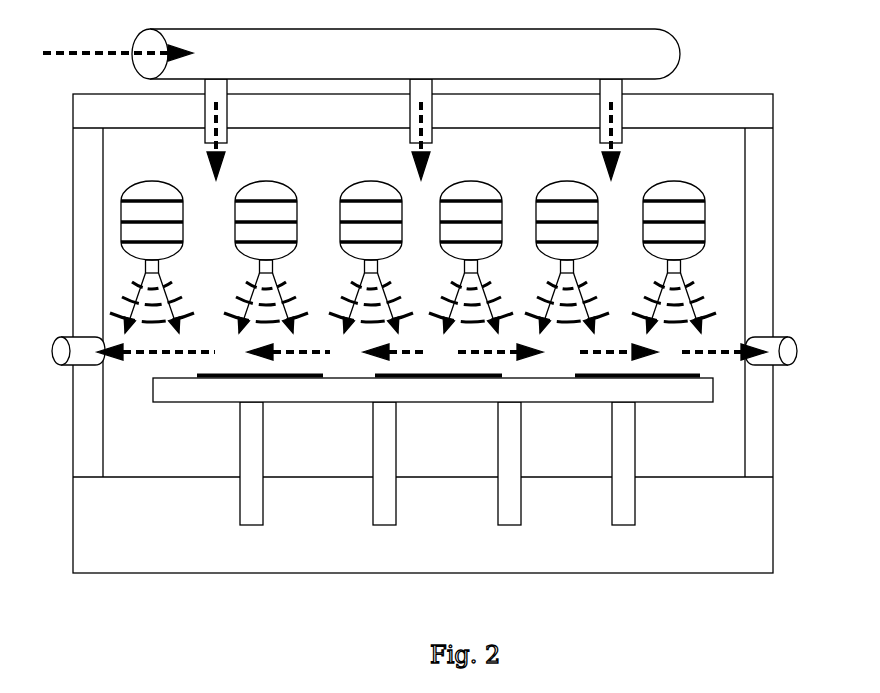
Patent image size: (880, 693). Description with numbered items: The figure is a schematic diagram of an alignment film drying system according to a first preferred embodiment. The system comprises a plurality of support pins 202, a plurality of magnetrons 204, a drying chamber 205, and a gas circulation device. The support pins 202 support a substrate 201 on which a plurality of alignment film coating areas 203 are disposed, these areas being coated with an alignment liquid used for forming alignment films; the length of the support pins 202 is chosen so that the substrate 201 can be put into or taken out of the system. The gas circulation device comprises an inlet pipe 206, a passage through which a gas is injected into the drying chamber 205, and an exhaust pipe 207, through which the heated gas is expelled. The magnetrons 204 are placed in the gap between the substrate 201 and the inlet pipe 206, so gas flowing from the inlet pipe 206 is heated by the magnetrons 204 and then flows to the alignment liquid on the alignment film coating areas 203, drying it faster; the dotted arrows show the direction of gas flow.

The substrate 201 is at (687, 393).
The support pins 202 is at (625, 451).
The alignment film coating areas 203 is at (213, 378).
The magnetrons 204 is at (692, 211).
The drying chamber 205 is at (763, 252).
The inlet pipe 206 is at (612, 94).
The exhaust pipe 207 is at (778, 337).